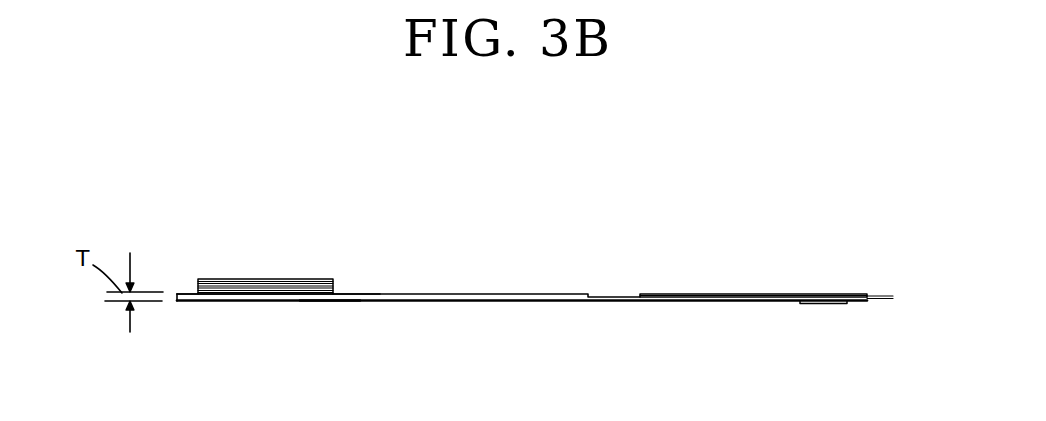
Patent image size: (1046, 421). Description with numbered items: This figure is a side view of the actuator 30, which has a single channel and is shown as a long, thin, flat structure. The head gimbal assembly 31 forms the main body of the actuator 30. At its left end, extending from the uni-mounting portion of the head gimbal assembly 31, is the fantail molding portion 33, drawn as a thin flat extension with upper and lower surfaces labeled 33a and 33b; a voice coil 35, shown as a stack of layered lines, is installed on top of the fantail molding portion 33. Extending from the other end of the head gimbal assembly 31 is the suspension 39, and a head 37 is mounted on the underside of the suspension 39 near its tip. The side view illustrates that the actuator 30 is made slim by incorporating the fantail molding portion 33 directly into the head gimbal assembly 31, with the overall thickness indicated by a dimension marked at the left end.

The actuator 30 is at (818, 235).
The head gimbal assembly 31 is at (453, 293).
The fantail molding portion 33 is at (181, 287).
The upper surface portion 33a is at (355, 297).
The lower surface portion 33b is at (327, 303).
The voice coil 35 is at (257, 280).
The head 37 is at (845, 303).
The suspension 39 is at (713, 293).